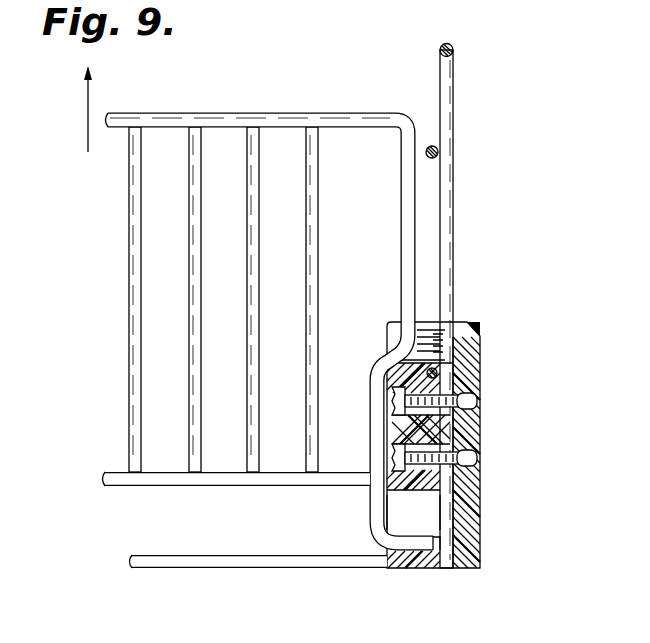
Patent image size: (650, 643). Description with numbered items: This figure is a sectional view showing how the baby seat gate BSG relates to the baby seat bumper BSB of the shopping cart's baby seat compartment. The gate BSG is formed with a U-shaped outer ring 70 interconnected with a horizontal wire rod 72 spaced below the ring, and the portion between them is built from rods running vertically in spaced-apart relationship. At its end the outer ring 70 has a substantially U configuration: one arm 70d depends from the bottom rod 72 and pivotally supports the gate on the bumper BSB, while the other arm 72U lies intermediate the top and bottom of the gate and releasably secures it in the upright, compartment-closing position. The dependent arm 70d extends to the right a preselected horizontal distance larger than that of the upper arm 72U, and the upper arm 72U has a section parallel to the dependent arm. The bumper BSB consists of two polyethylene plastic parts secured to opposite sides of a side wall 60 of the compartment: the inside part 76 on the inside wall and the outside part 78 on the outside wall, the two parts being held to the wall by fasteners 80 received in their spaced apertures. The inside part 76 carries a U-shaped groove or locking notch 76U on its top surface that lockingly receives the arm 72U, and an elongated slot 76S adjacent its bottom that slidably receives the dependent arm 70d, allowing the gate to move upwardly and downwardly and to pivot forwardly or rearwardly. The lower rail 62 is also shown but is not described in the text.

The side wall 60 is at (454, 173).
The bottom rail 62 is at (242, 569).
The U-shaped outer ring 70 is at (152, 120).
The dependent arm 70d is at (413, 544).
The horizontal wire rod 72 is at (132, 485).
The upper arm 72U is at (383, 357).
The inside part 76 is at (378, 491).
The U-shaped groove or locking notch 76U is at (427, 330).
The elongated slot 76S is at (428, 488).
The outside part 78 is at (484, 433).
The fasteners 80 is at (455, 392).
The baby seat gate BSG is at (337, 106).
The baby seat bumper BSB is at (492, 330).